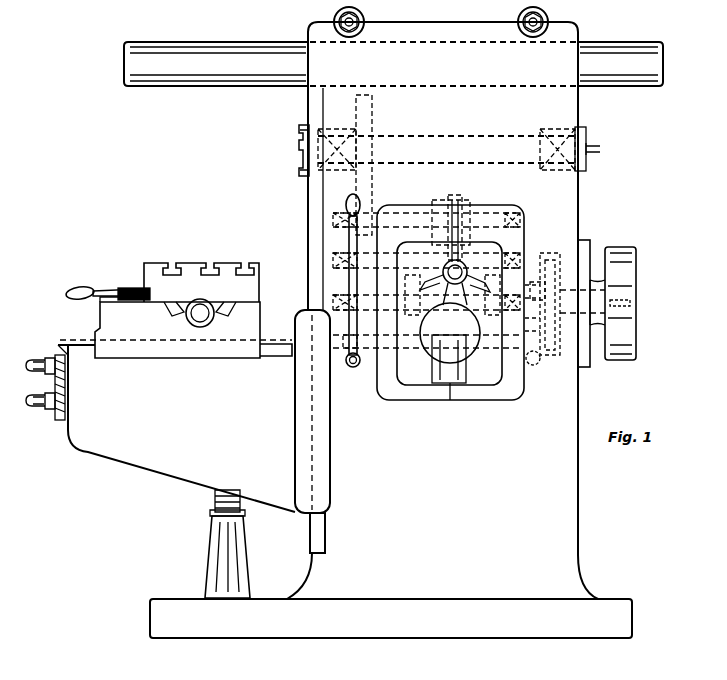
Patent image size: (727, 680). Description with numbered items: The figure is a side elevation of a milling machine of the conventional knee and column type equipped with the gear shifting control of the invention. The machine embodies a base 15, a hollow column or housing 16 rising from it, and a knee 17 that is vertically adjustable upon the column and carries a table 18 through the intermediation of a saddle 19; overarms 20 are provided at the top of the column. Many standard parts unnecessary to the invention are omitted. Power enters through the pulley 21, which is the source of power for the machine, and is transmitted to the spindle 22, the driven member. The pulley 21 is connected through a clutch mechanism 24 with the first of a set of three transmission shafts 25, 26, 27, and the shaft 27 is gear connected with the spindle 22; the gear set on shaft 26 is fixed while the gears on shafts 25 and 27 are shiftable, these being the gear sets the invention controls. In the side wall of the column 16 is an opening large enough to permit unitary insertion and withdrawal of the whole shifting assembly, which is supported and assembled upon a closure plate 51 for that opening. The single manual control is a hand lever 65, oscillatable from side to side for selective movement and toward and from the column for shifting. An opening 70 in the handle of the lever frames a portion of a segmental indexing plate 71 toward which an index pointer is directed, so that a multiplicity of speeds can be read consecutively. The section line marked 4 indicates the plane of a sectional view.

The base 15 is at (375, 638).
The hollow column 16 is at (578, 505).
The knee 17 is at (115, 455).
The table 18 is at (190, 263).
The saddle 19 is at (256, 312).
The overarms 20 is at (210, 86).
The pulley 21 is at (636, 282).
The spindle 22 is at (299, 165).
The clutch mechanism 24 is at (563, 246).
The transmission shaft 25 is at (335, 305).
The transmission shaft 26 is at (335, 262).
The transmission shaft 27 is at (335, 222).
The closure plate 51 is at (500, 400).
The hand lever 65 is at (458, 245).
The opening 70 is at (470, 260).
The segmental indexing plate 71 is at (442, 264).
The section line 4- 4 is at (436, 435).